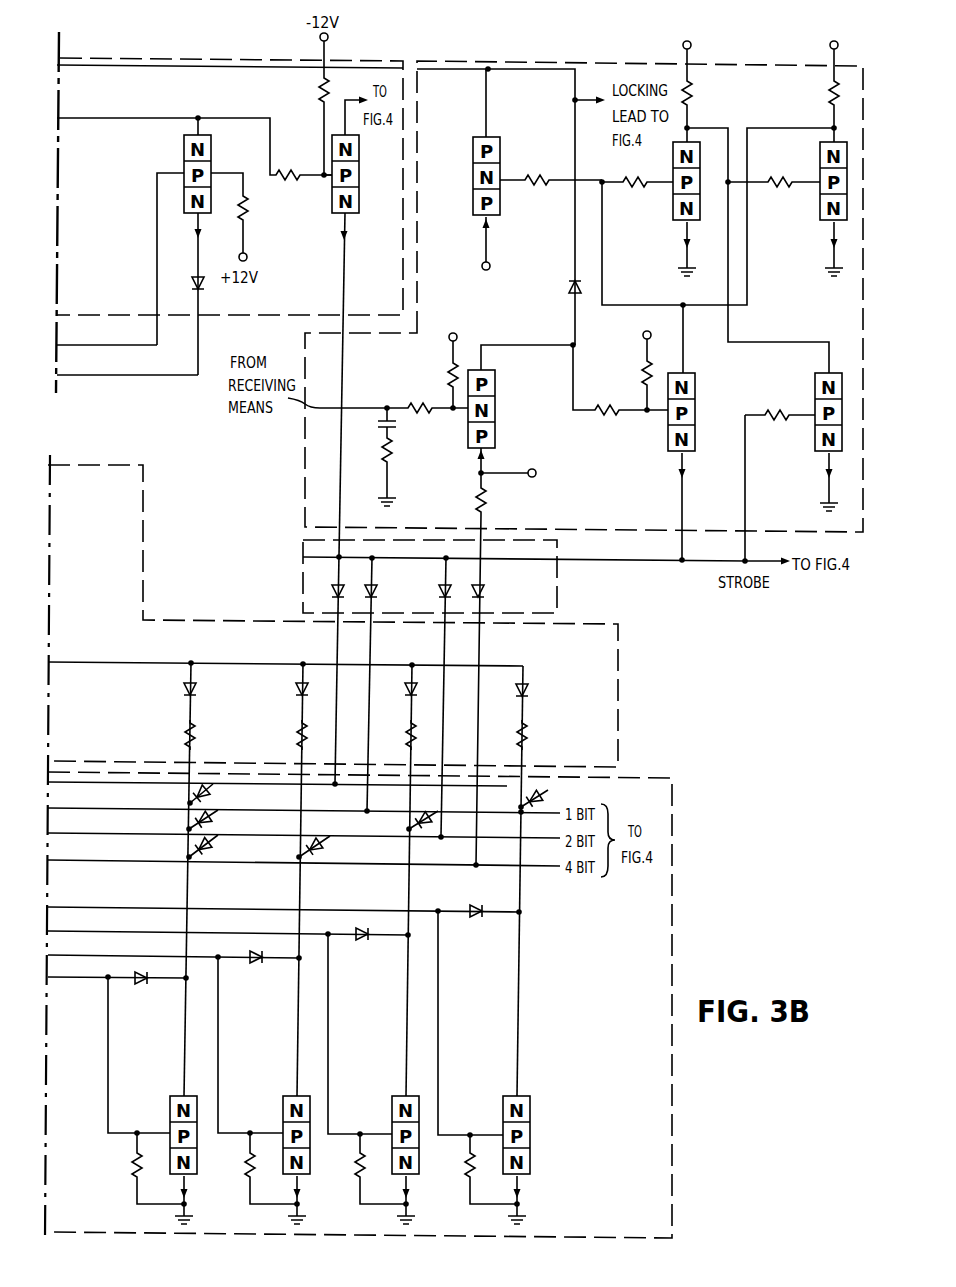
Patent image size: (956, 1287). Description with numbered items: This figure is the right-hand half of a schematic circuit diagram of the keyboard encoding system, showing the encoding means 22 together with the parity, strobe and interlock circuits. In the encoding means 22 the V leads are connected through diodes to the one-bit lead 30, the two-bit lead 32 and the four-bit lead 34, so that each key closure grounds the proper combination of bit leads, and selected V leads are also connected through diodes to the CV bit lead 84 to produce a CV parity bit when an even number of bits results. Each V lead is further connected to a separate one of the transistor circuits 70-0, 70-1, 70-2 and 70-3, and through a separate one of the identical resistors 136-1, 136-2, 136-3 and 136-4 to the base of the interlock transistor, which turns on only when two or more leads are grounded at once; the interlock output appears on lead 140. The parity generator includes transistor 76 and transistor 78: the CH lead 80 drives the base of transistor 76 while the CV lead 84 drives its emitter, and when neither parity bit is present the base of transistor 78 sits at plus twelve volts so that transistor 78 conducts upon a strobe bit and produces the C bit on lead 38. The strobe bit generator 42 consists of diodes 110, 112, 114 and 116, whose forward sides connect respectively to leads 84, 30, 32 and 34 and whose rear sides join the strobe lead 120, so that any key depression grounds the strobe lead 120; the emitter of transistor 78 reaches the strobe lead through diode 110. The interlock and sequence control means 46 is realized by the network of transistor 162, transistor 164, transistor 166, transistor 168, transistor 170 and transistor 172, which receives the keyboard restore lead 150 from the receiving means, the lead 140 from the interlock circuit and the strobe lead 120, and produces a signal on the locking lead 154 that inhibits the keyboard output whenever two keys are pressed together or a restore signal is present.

The C bit lead 38 is at (351, 97).
The transistor 76 is at (209, 189).
The transistor 78 is at (359, 203).
The CH lead 80 is at (87, 348).
The CV bit lead 84 is at (87, 378).
The output lead 140 is at (452, 72).
The locking lead 154 is at (588, 99).
The transistor 162 is at (500, 205).
The transistor 164 is at (673, 207).
The transistor 166 is at (820, 207).
The transistor 168 is at (697, 388).
The transistor 170 is at (815, 390).
The transistor 172 is at (496, 387).
The keyboard restore lead 150 is at (367, 406).
The interlock and sequence control means 46 is at (303, 503).
The strobe bit generator 42 is at (557, 573).
The diode 110 is at (340, 591).
The diode 112 is at (377, 591).
The diode 114 is at (448, 591).
The diode 116 is at (483, 591).
The strobe lead 120 is at (746, 562).
The resistor 136-1 is at (528, 734).
The resistor 136-2 is at (408, 734).
The resistor 136-3 is at (298, 734).
The resistor 136-4 is at (186, 734).
The 1 bit lead 30 is at (556, 816).
The 2 bit lead 32 is at (556, 841).
The 4 bit lead 34 is at (556, 868).
The encoding means 22 is at (672, 949).
The transistor circuit 70-0 is at (503, 1100).
The transistor circuit 70-1 is at (392, 1100).
The transistor circuit 70-2 is at (283, 1100).
The transistor circuit 70-3 is at (170, 1100).